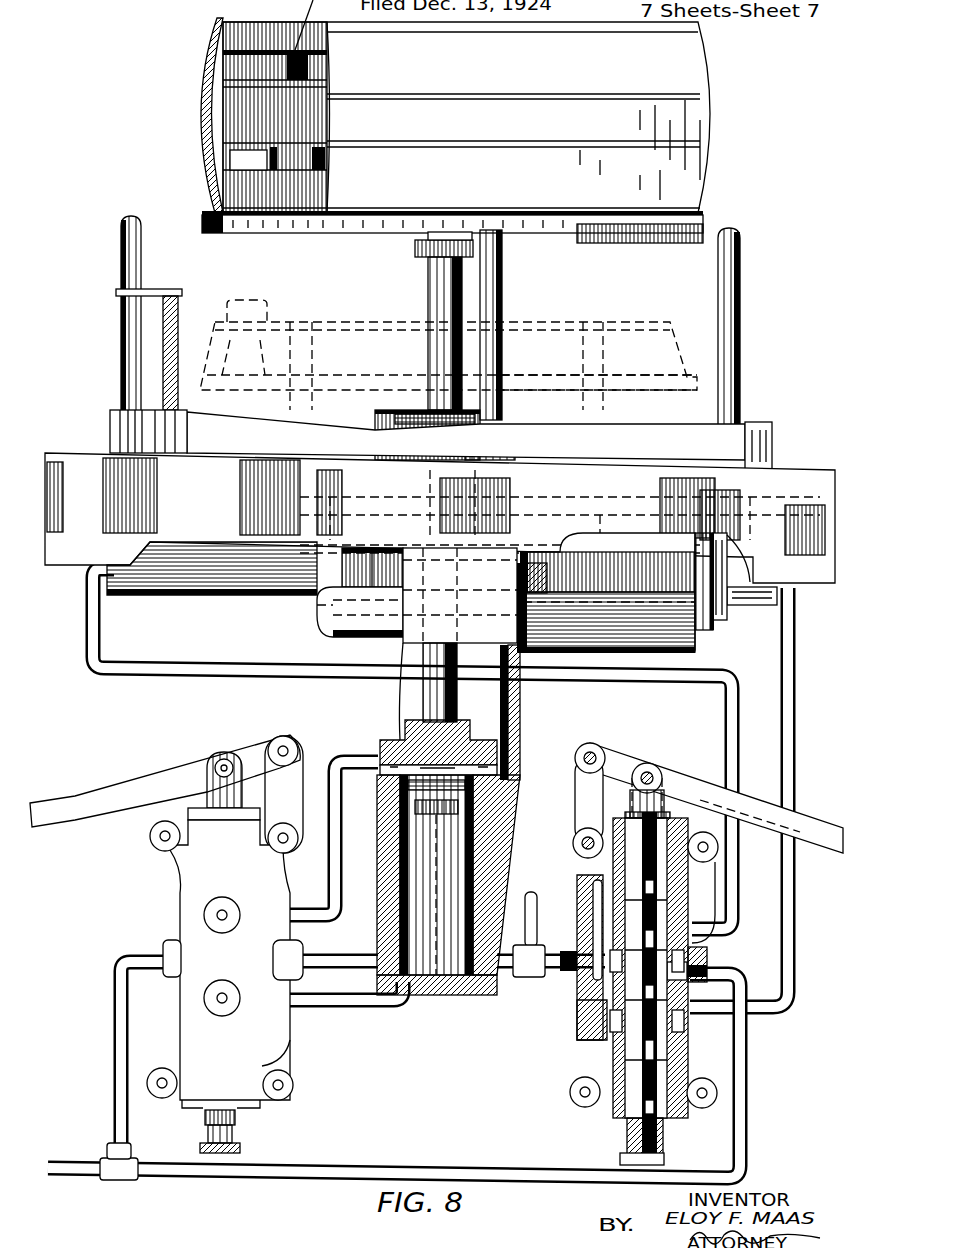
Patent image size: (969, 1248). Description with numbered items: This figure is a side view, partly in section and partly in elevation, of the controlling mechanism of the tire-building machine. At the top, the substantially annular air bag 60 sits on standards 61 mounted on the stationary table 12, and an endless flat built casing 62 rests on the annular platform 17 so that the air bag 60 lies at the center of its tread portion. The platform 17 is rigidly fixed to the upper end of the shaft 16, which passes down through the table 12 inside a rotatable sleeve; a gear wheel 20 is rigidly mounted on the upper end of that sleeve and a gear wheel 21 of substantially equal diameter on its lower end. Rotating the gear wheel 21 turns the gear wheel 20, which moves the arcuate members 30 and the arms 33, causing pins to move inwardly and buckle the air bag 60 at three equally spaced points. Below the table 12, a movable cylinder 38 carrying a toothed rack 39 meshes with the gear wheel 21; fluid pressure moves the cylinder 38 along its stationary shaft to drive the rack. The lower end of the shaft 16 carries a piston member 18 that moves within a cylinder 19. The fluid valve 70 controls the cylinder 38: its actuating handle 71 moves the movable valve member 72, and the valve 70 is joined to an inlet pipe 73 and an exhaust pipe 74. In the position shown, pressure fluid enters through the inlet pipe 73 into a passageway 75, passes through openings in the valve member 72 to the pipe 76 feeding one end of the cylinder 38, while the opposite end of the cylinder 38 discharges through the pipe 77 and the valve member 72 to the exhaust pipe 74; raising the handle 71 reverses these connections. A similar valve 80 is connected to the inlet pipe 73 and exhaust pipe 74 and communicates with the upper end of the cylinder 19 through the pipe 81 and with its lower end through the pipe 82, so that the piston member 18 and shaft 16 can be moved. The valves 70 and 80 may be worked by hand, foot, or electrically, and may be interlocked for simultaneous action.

The table 12 is at (805, 480).
The shaft 16 is at (430, 292).
The annular platform 17 is at (687, 247).
The piston member 18 is at (430, 787).
The cylinder 19 is at (490, 991).
The gear wheel 20 is at (400, 433).
The gear wheel 21 is at (313, 618).
The arcuate members 30 is at (752, 443).
The arms 33 is at (143, 281).
The cylinder 38 is at (713, 651).
The toothed rack 39 is at (718, 628).
The air bag 60 is at (197, 132).
The standards 61 is at (175, 321).
The casing 62 is at (197, 88).
The fluid valve 70 is at (713, 967).
The actuating handle 71 is at (683, 782).
The movable valve member 72 is at (677, 820).
The inlet pipe 73 is at (348, 963).
The exhaust pipe 74 is at (545, 1174).
The passageway 75 is at (580, 994).
The pipe 76 is at (788, 914).
The pipe 77 is at (215, 662).
The valve 80 is at (190, 866).
The pipe 81 is at (350, 756).
The pipe 82 is at (348, 1008).